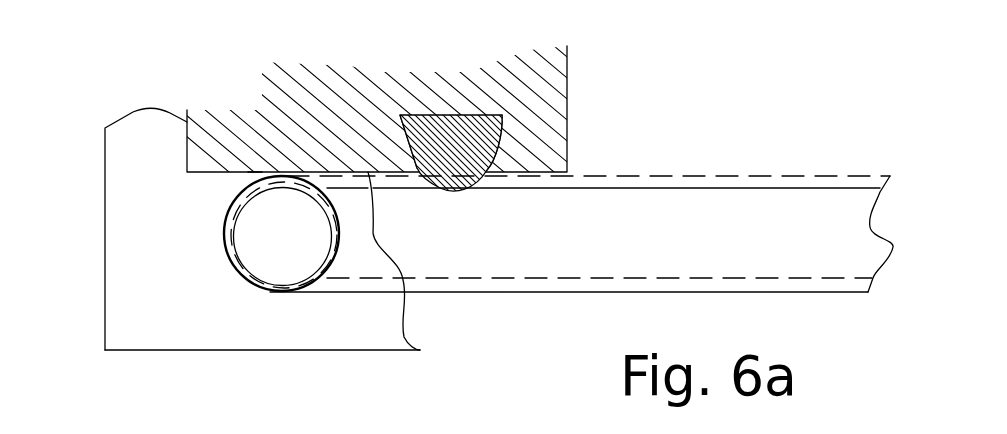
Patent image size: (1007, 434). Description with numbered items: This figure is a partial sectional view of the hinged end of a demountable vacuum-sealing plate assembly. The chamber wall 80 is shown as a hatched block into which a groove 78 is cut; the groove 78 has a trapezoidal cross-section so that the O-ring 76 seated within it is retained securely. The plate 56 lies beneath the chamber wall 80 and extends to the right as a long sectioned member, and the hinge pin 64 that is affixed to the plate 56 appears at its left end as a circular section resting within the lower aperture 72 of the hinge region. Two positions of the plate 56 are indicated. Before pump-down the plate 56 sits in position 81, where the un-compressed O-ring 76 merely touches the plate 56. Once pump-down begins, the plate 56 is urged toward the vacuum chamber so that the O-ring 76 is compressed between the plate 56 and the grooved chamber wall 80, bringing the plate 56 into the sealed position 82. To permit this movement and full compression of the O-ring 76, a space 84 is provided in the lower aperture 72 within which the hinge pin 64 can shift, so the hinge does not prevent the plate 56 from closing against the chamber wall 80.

The plate 56 is at (833, 260).
The hinge pin 64 is at (277, 252).
The lower aperture 72 is at (222, 233).
The O-ring 76 is at (487, 150).
The groove 78 is at (500, 115).
The chamber wall 80 is at (567, 97).
The position 81 is at (778, 188).
The sealed position 82 is at (706, 175).
The space 84 is at (262, 181).